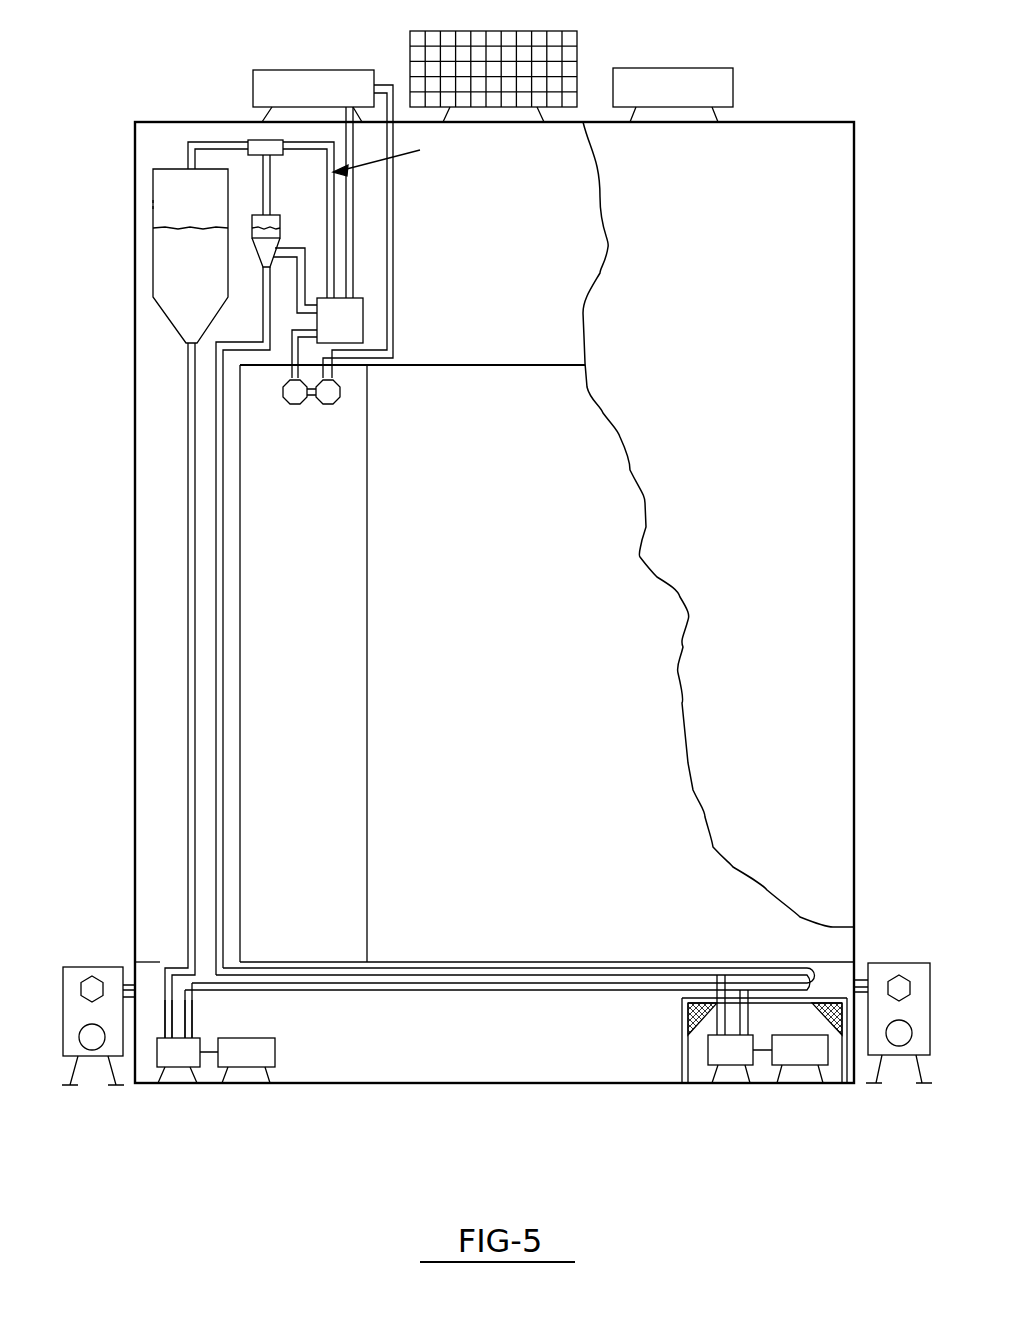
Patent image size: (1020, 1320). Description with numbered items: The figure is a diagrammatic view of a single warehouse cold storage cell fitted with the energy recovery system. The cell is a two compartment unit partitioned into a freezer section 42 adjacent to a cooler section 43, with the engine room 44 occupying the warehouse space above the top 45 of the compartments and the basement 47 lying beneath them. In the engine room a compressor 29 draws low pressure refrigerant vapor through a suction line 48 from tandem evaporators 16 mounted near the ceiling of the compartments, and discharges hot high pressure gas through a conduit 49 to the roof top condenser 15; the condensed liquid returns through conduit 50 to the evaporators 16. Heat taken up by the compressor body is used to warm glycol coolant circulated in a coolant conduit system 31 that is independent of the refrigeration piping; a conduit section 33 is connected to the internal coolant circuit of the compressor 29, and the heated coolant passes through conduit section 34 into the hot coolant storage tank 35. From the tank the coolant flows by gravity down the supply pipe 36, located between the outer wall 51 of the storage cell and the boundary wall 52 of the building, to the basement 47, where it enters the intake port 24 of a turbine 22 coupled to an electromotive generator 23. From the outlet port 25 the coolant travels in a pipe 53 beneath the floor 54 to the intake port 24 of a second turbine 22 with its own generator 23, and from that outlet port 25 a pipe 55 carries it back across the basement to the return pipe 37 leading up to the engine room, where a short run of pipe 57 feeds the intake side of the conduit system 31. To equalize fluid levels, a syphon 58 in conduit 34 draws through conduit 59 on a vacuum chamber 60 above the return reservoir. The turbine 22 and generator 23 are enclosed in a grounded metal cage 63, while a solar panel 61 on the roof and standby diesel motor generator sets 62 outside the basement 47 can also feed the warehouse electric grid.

The condenser 15 is at (335, 75).
The solar panel 61 is at (478, 32).
The conduit section 34 is at (210, 145).
The syphon 58 is at (262, 148).
The conduit 59 is at (266, 170).
The vacuum chamber 60 is at (250, 220).
The hot coolant storage tank 35 is at (165, 270).
The coolant conduit system 31 is at (394, 156).
The conduit section 33 is at (330, 218).
The conduit 50 is at (390, 240).
The conduit 49 is at (350, 270).
The pipe 57 is at (302, 293).
The compressor 29 is at (357, 333).
The suction line 48 is at (292, 352).
The evaporators 16 is at (297, 400).
The engine room 44 is at (565, 237).
The top 45 is at (560, 363).
The supply pipe 36 is at (193, 575).
The outer wall 51 is at (370, 572).
The cooler section 43 is at (294, 659).
The freezer section 42 is at (614, 649).
The return pipe 37 is at (222, 775).
The boundary wall 52 is at (136, 767).
The pipe 55 is at (415, 970).
The floor 54 is at (512, 967).
The diesel motor generator sets 62 is at (110, 967).
The intake port 24 is at (170, 1030).
The outlet port 25 is at (190, 1036).
The pipe 53 is at (370, 987).
The basement 47 is at (527, 1042).
The metal cage 63 is at (690, 1012).
The turbine 22 is at (178, 1050).
The electromotive generator 23 is at (263, 1048).